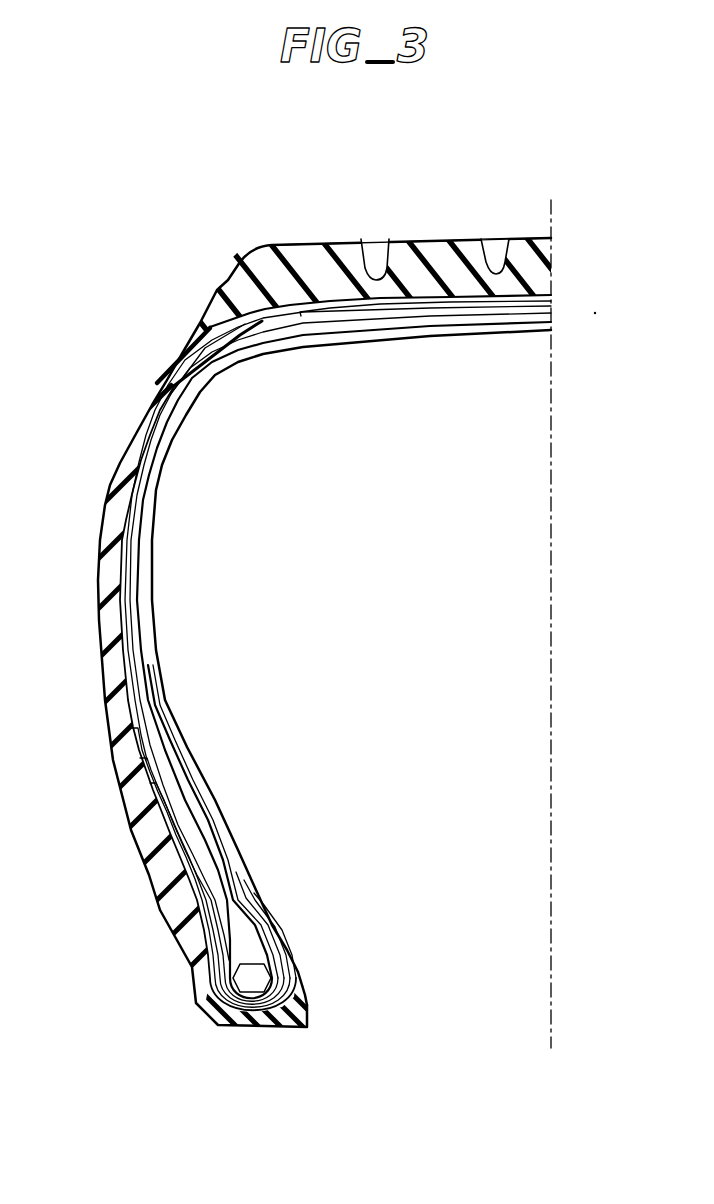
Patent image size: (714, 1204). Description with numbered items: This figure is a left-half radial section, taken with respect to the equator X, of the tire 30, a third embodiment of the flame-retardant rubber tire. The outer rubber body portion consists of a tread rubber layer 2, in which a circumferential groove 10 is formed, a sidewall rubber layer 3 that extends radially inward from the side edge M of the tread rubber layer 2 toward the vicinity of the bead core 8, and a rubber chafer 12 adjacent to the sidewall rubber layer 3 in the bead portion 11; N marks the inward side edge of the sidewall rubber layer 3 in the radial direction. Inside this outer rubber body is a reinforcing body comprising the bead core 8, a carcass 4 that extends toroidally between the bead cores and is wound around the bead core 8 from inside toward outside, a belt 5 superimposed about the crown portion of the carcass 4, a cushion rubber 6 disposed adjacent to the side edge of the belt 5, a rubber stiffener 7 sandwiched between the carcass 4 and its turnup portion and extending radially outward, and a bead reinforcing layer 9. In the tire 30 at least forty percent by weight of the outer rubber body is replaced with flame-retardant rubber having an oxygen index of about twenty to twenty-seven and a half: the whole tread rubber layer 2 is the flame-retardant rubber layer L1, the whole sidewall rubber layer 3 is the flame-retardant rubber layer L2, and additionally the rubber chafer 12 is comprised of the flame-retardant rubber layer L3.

The tire 30 is at (238, 247).
The tread rubber layer 2 is at (339, 240).
The circumferential groove 10 is at (378, 250).
The belt 5 is at (519, 287).
The flame-retardant rubber layer L1 is at (290, 252).
The equator X is at (549, 618).
The side edge of the tread rubber layer M is at (197, 328).
The cushion rubber 6 is at (272, 330).
The carcass 4 is at (128, 540).
The rubber stiffener 7 is at (243, 877).
The bead portion 11 is at (177, 913).
The bead reinforcing layer 9 is at (135, 845).
The rubber chafer 12 is at (193, 960).
The sidewall rubber layer 3 is at (100, 540).
The flame-retardant rubber layer L2 is at (100, 630).
The flame-retardant rubber layer L3 is at (203, 1017).
The inward side edge of the sidewall rubber layer N is at (197, 982).
The bead core 8 is at (263, 977).